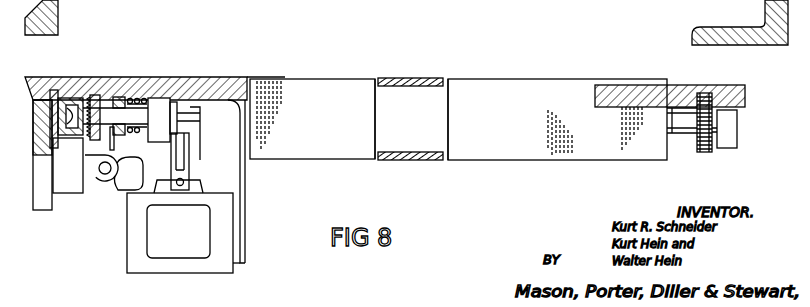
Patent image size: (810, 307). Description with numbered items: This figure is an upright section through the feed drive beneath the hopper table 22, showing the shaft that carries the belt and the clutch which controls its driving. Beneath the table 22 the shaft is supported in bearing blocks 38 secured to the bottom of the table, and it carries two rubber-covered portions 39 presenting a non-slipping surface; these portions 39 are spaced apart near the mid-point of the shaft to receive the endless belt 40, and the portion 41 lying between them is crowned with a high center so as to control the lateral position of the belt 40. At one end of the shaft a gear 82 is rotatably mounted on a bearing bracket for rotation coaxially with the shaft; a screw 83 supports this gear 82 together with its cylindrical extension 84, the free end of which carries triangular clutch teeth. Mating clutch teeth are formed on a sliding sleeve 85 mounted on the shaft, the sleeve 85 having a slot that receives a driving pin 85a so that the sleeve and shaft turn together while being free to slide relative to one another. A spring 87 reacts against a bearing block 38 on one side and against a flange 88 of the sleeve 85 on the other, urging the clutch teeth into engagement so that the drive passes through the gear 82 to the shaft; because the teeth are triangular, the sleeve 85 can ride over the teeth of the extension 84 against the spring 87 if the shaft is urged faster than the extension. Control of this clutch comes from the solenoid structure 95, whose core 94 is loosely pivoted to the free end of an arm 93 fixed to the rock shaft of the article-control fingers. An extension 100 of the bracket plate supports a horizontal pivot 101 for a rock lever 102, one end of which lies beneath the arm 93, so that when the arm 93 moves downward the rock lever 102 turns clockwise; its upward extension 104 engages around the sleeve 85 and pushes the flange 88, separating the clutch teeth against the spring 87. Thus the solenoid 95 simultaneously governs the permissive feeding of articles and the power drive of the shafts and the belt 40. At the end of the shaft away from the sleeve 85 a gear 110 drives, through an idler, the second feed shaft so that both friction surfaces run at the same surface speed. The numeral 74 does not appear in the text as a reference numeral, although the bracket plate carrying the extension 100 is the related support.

The hopper table 22 is at (160, 108).
The bearing block 38 is at (738, 128).
The non-slipping portions of shaft 39 is at (458, 119).
The endless belt 40 is at (415, 79).
The crowned portion of shaft 41 is at (411, 119).
The vertical plate 74 is at (44, 212).
The gear 82 is at (50, 83).
The screw 83 is at (71, 140).
The cylindrical extension 84 is at (72, 98).
The sliding sleeve 85 is at (95, 95).
The driving pin 85a is at (135, 100).
The spring 87 is at (146, 97).
The flange 88 is at (118, 97).
The arm 93 is at (183, 137).
The core 94 is at (189, 172).
The solenoid structure 95 is at (222, 274).
The extension of bracket plate 100 is at (97, 176).
The horizontal pivot 101 is at (105, 172).
The rock lever 102 is at (125, 190).
The upward extension 104 is at (114, 150).
The gear 110 is at (705, 153).